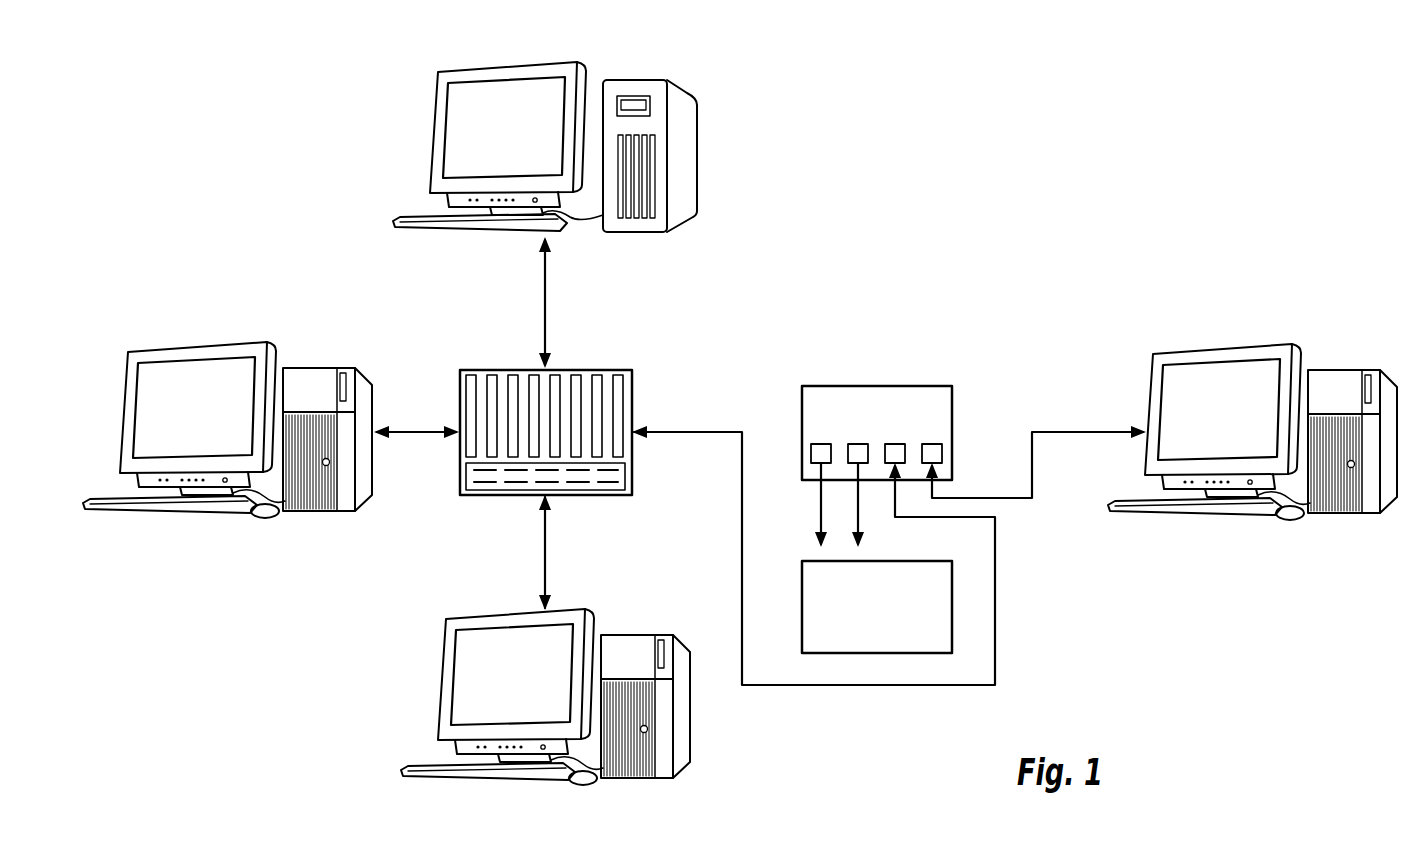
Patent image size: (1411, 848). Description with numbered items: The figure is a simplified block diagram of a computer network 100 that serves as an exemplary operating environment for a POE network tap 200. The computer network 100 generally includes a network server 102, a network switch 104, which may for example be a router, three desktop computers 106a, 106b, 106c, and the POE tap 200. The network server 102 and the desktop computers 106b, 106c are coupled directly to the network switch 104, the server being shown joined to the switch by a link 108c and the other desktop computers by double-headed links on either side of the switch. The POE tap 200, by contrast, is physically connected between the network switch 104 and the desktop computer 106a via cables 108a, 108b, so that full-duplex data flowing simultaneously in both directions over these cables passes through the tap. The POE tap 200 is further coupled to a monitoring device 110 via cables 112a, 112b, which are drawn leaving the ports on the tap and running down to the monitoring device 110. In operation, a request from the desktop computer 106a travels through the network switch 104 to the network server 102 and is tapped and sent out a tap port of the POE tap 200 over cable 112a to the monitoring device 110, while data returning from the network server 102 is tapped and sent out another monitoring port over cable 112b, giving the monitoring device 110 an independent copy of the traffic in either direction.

The computer network 100 is at (966, 110).
The network server 102 is at (697, 155).
The network switch 104 is at (592, 370).
The desktop computer 106a is at (1222, 347).
The desktop computer 106b is at (197, 345).
The desktop computer 106c is at (438, 679).
The cable 108a is at (687, 428).
The cable 108b is at (1090, 428).
The network link 108c is at (543, 300).
The monitoring device 110 is at (877, 607).
The cable 112a is at (819, 502).
The cable 112b is at (860, 512).
The POE network tap 200 is at (917, 366).